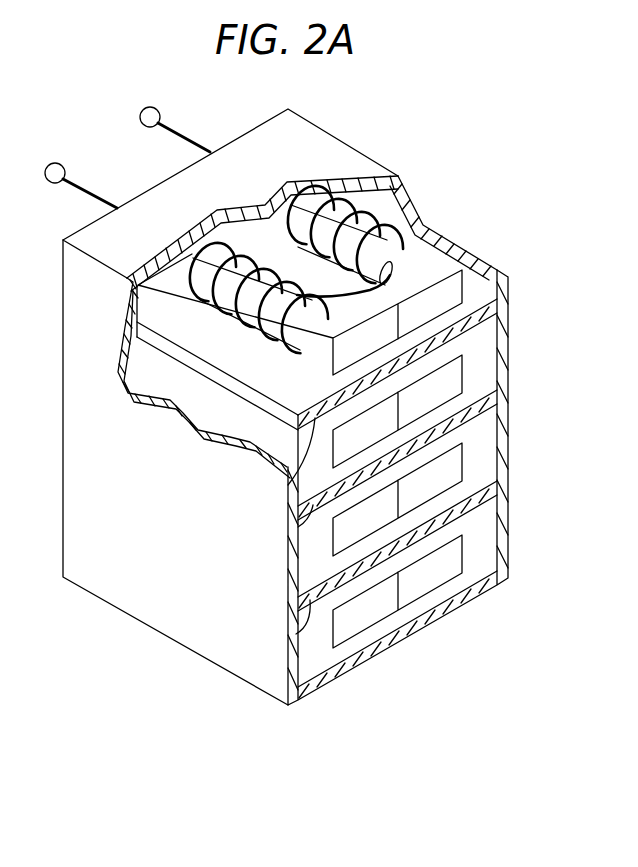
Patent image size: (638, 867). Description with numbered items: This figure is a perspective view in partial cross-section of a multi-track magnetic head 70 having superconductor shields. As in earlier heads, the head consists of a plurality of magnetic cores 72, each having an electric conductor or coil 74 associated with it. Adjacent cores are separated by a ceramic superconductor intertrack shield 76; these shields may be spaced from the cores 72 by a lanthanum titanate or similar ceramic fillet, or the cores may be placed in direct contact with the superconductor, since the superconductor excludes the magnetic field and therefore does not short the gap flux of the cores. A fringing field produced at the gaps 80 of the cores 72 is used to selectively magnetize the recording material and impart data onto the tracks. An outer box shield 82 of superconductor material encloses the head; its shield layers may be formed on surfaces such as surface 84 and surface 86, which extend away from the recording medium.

The multi-track magnetic head 70 is at (372, 138).
The magnetic core 72 is at (481, 263).
The coil 74 is at (418, 232).
The ceramic superconductor intertrack shield 76 is at (292, 485).
The gap 80 is at (403, 598).
The outer box shield 82 is at (293, 135).
The surface 84 is at (140, 508).
The surface 86 is at (213, 204).